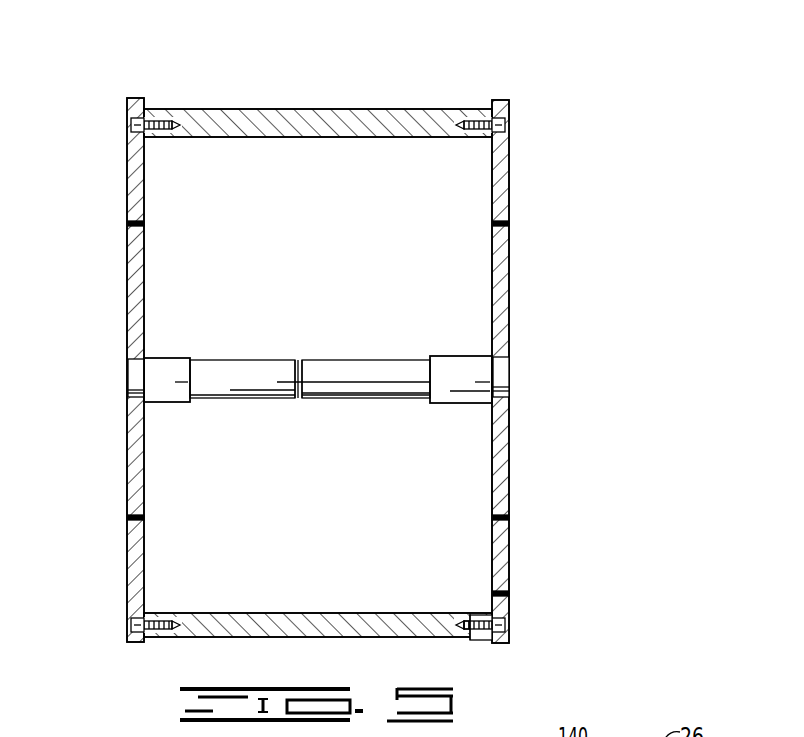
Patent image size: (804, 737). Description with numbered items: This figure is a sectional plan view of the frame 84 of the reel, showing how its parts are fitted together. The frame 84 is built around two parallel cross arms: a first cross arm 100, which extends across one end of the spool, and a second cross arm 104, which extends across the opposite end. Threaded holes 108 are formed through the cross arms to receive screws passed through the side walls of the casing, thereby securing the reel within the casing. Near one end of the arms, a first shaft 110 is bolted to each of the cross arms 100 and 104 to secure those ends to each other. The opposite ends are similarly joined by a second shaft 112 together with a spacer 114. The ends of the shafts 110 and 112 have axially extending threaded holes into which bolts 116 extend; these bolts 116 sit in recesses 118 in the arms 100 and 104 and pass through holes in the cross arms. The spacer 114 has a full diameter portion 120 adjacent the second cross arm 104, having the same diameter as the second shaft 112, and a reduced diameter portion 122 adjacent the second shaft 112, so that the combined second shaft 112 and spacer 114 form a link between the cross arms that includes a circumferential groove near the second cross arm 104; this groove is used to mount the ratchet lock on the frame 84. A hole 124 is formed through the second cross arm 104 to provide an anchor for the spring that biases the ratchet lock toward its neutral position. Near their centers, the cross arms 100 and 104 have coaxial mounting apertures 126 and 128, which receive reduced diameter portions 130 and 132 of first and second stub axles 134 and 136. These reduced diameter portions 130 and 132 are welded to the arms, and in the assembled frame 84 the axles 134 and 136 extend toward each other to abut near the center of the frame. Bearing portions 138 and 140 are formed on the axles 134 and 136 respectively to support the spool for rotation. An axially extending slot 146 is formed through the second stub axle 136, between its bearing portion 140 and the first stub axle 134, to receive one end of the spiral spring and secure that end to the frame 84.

The frame 84 is at (389, 85).
The first cross arm 100 is at (138, 297).
The second cross arm 104 is at (497, 292).
The threaded holes 108 is at (135, 225).
The first shaft 110 is at (275, 121).
The second shaft 112 is at (205, 628).
The spacer 114 is at (470, 641).
The bolts 116 is at (152, 116).
The recesses 118 is at (131, 127).
The full diameter portion 120 is at (478, 622).
The reduced diameter portion 122 is at (473, 632).
The hole 124 is at (503, 593).
The mounting aperture 126 is at (137, 372).
The mounting aperture 128 is at (500, 363).
The reduced diameter portion 130 is at (130, 390).
The reduced diameter portion 132 is at (498, 390).
The first stub axle 134 is at (243, 372).
The second stub axle 136 is at (327, 367).
The bearing portion 138 is at (170, 360).
The bearing portion 140 is at (467, 363).
The slot 146 is at (327, 397).